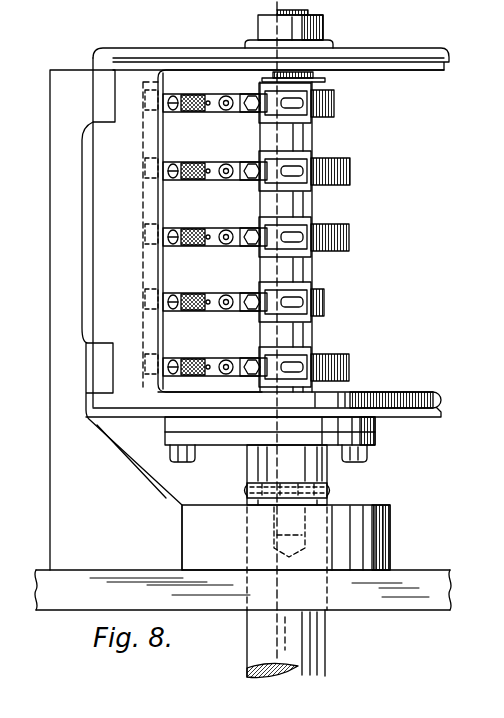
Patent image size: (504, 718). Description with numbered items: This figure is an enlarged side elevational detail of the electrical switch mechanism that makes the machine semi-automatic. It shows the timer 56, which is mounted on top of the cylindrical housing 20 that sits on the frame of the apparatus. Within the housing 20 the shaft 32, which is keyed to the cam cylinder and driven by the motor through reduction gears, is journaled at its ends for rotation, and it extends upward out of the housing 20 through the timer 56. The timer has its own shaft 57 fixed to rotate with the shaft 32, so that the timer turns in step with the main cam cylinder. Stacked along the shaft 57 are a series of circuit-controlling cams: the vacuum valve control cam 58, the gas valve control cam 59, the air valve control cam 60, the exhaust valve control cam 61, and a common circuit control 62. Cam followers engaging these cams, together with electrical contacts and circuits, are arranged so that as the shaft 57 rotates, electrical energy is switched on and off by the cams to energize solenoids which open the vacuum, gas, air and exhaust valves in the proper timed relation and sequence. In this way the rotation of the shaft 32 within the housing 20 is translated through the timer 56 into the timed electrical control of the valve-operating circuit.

The cylindrical housing 20 is at (422, 573).
The shaft 32 is at (325, 635).
The timer 56 is at (427, 390).
The shaft 57 is at (312, 270).
The vacuum valve control cam 58 is at (334, 104).
The gas valve control cam 59 is at (350, 172).
The air valve control cam 60 is at (349, 238).
The exhaust valve control cam 61 is at (324, 308).
The common circuit control 62 is at (349, 368).